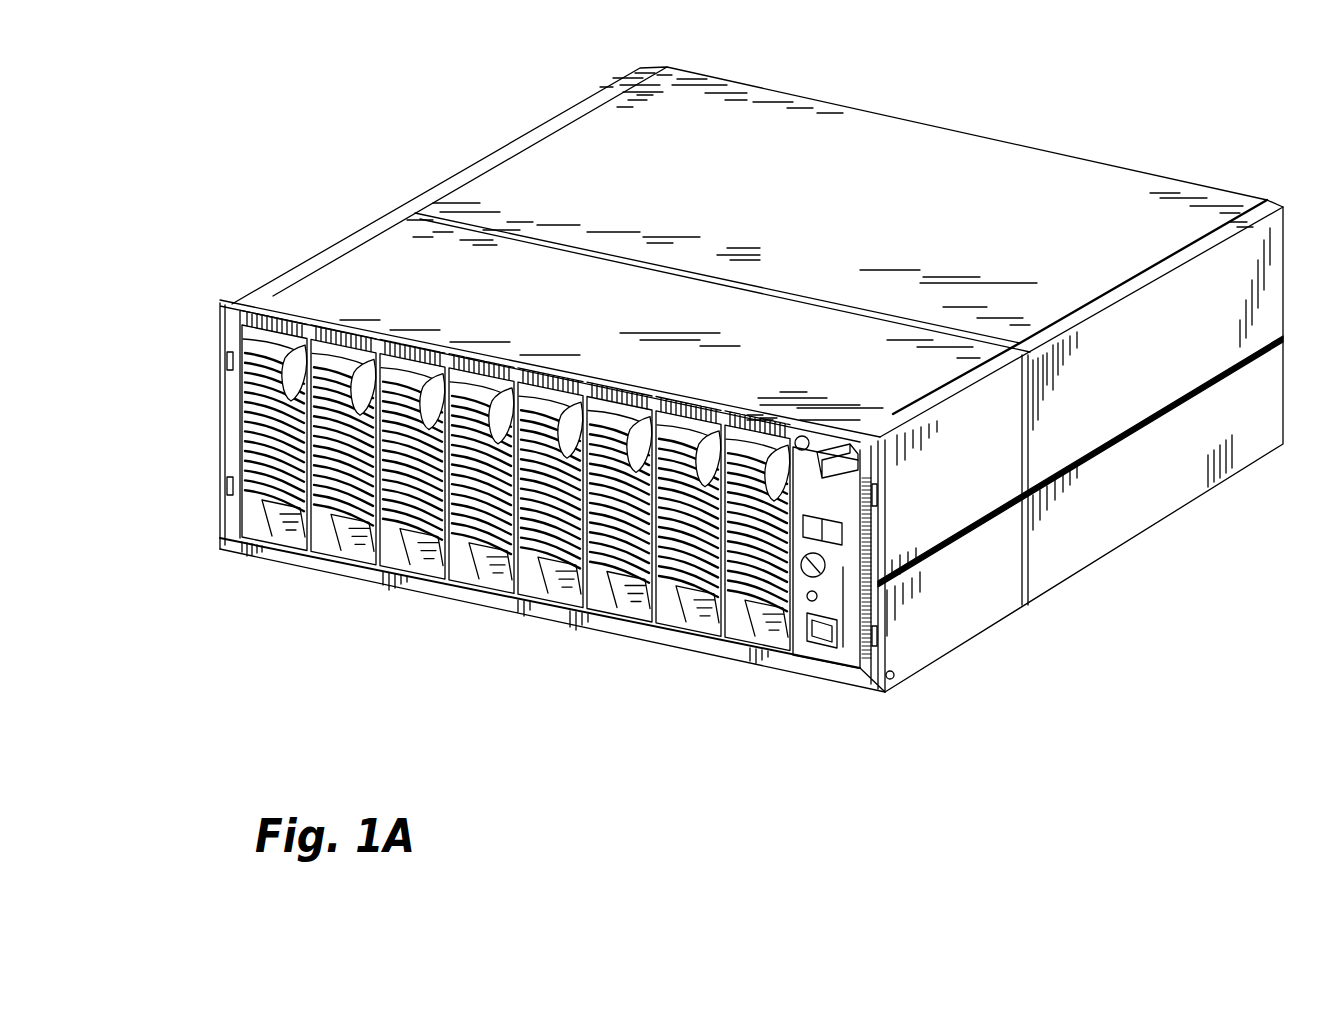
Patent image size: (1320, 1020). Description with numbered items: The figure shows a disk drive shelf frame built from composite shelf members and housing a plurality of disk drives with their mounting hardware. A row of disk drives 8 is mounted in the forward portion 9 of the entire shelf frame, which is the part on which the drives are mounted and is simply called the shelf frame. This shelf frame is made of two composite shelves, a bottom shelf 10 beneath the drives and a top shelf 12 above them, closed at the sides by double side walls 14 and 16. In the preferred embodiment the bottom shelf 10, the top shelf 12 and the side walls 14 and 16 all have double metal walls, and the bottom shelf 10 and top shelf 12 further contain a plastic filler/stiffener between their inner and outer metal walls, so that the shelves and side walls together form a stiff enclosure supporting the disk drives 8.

The disk drives 8 is at (493, 575).
The forward portion of the shelf frame 9 is at (1027, 612).
The bottom shelf 10 is at (489, 594).
The top shelf 12 is at (413, 270).
The side wall 14 is at (230, 440).
The side wall 16 is at (993, 555).